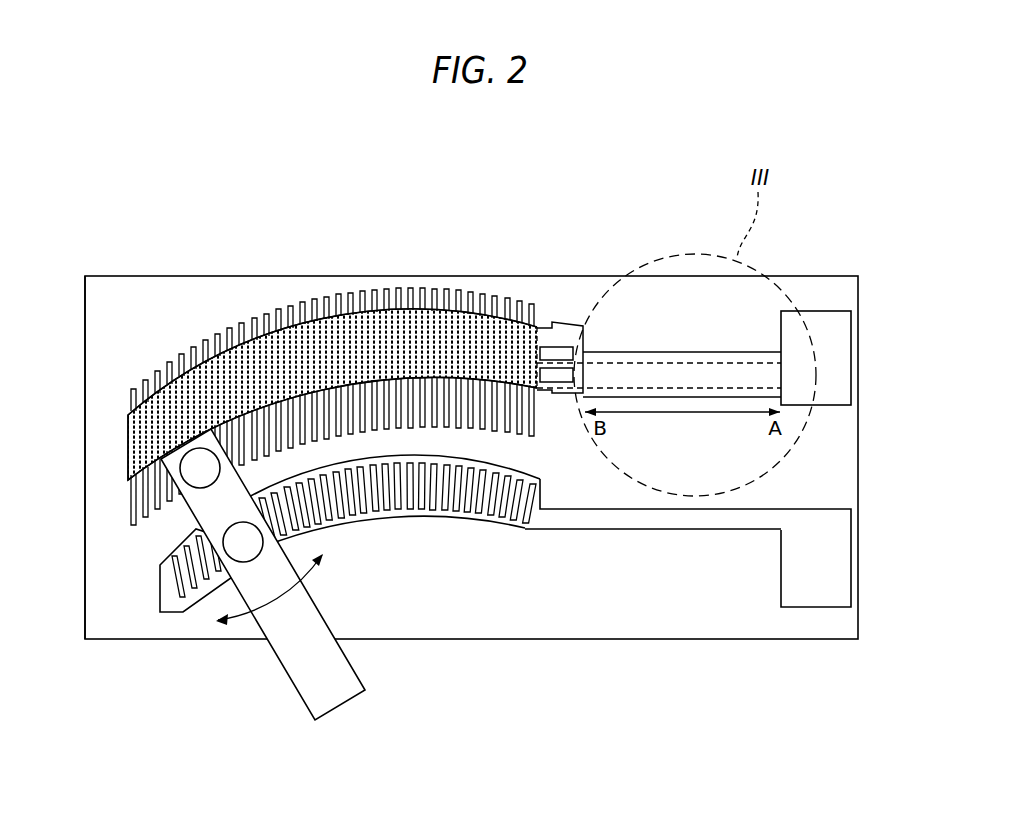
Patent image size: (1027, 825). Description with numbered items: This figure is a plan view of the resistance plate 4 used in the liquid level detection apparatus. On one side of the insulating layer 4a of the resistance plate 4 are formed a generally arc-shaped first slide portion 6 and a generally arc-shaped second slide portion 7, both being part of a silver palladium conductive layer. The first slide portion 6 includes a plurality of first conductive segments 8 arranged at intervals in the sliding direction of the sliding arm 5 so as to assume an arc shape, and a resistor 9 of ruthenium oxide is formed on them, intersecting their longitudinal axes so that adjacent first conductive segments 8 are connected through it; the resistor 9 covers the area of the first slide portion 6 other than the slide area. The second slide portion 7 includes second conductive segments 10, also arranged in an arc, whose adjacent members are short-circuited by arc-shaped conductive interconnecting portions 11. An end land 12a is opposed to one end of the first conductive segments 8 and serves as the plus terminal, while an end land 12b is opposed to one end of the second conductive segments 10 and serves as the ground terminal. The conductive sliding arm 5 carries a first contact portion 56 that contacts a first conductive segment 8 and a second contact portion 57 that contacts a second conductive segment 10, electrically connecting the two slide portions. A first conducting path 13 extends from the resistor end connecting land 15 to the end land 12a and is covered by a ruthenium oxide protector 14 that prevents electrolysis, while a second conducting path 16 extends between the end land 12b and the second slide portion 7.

The resistance plate 4 is at (826, 264).
The insulating layer 4a is at (97, 375).
The sliding arm 5 is at (335, 695).
The first slide portion 6 is at (118, 505).
The second slide portion 7 is at (145, 588).
The first conductive segments 8 is at (124, 388).
The resistor 9 is at (128, 448).
The second conductive segments 10 is at (185, 577).
The conductive interconnecting portions 11 is at (347, 518).
The end land 12a is at (845, 355).
The end land 12b is at (845, 560).
The first conducting path 13 is at (640, 372).
The protector 14 is at (683, 353).
The resistor end connecting land 15 is at (560, 322).
The second conducting path 16 is at (649, 518).
The first contact portion 56 is at (200, 483).
The second contact portion 57 is at (247, 550).